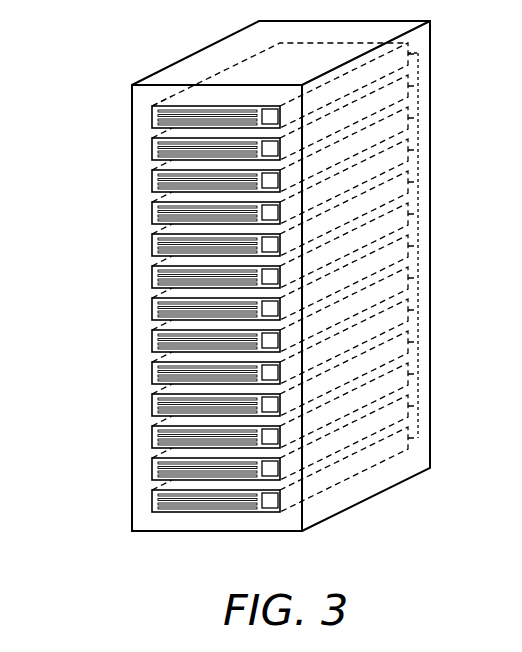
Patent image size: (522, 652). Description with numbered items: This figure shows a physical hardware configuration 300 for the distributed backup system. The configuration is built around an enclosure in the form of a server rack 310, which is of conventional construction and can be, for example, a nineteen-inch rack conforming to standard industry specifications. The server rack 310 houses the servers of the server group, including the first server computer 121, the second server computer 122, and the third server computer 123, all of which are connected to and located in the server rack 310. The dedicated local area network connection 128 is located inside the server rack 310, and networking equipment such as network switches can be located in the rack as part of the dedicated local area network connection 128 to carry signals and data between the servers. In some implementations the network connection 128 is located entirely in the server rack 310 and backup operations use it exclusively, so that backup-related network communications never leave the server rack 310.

The physical hardware configuration 300 is at (264, 276).
The first server computer 121 is at (152, 112).
The second server computer 122 is at (152, 144).
The third server computer 123 is at (152, 177).
The server rack 310 is at (151, 304).
The dedicated local area network connection 128 is at (419, 73).